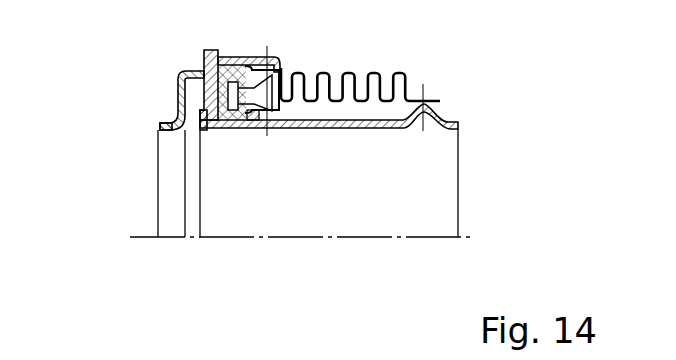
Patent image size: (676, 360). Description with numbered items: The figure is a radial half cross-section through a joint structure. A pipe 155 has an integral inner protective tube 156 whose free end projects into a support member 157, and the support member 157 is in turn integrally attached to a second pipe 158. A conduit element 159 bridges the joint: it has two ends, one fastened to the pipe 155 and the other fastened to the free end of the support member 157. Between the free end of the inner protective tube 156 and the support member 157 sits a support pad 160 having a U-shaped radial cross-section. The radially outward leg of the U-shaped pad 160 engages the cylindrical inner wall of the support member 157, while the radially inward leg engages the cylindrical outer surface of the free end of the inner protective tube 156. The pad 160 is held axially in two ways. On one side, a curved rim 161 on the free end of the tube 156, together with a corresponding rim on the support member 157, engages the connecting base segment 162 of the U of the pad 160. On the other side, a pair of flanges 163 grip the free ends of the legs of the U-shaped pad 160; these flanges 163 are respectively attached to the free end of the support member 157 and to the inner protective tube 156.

The pipe 155 is at (459, 125).
The inner protective tube 156 is at (361, 126).
The support member 157 is at (202, 53).
The pipe 158 is at (158, 129).
The conduit element 159 is at (347, 72).
The support pad 160 is at (234, 58).
The curved rim 161 is at (200, 131).
The connecting base segment 162 is at (182, 88).
The flanges 163 is at (258, 130).